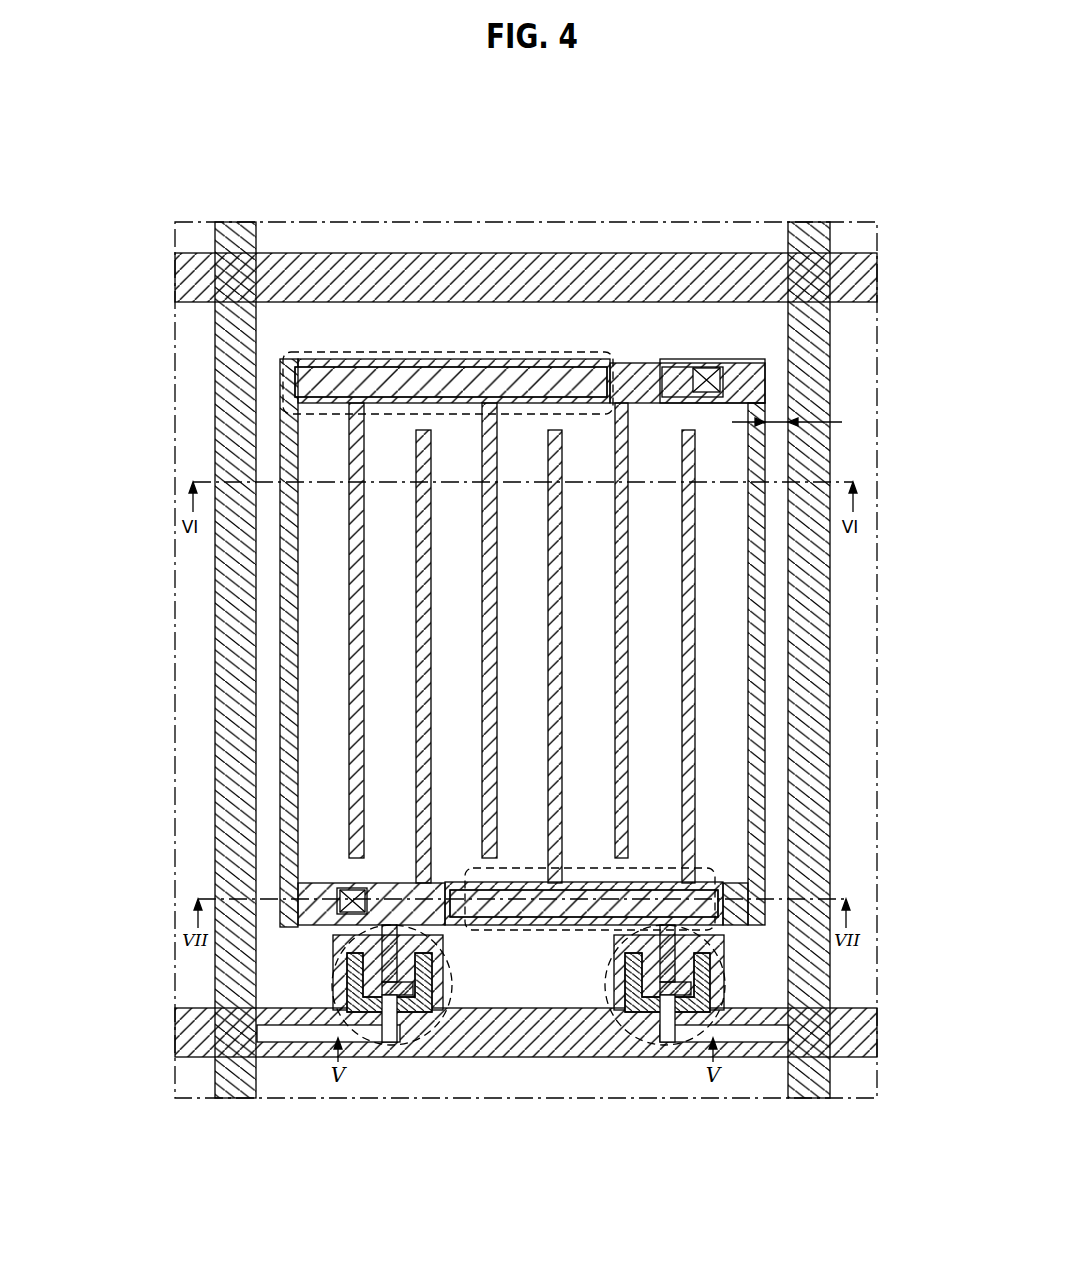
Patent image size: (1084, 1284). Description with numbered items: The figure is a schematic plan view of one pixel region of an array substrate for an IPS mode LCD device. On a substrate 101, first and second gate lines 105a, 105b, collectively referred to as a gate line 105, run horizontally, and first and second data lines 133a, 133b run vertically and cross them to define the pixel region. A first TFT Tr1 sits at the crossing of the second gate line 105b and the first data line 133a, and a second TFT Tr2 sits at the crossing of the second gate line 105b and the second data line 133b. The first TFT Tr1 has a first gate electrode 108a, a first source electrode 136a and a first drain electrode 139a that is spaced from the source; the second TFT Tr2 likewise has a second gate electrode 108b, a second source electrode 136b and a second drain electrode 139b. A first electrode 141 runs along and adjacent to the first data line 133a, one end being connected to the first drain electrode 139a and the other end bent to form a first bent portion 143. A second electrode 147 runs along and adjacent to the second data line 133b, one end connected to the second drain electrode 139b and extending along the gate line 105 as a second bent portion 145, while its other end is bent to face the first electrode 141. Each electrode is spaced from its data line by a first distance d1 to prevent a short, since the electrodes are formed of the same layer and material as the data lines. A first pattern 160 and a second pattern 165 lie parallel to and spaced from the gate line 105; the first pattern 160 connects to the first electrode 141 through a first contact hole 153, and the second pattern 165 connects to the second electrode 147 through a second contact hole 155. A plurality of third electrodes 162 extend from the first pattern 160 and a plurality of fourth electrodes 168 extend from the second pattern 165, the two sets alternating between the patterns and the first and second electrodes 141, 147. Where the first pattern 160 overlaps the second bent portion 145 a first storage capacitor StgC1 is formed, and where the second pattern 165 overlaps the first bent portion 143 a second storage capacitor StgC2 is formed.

The substrate 101 is at (764, 128).
The gate line 105 is at (463, 655).
The first gate line 105a is at (176, 298).
The second gate line 105b is at (176, 1010).
The first data line 133a is at (233, 226).
The second data line 133b is at (810, 226).
The first electrode 141 is at (288, 682).
The first bent portion 143 is at (371, 360).
The second bent portion 145 is at (546, 926).
The second electrode 147 is at (758, 650).
The first contact hole 153 is at (344, 914).
The second contact hole 155 is at (709, 366).
The first pattern 160 is at (521, 892).
The third electrodes 162 is at (423, 662).
The second pattern 165 is at (631, 374).
The fourth electrodes 168 is at (355, 588).
The first gate electrode 108a is at (407, 1010).
The second gate electrode 108b is at (667, 1017).
The first source electrode 136a is at (345, 1012).
The second source electrode 136b is at (635, 1015).
The first drain electrode 139a is at (390, 1042).
The second drain electrode 139b is at (717, 1013).
The first TFT Tr1 is at (405, 1020).
The second TFT Tr2 is at (650, 1035).
The first storage capacitor StgC1 is at (592, 866).
The second storage capacitor StgC2 is at (441, 356).
The first distance d1 is at (787, 414).